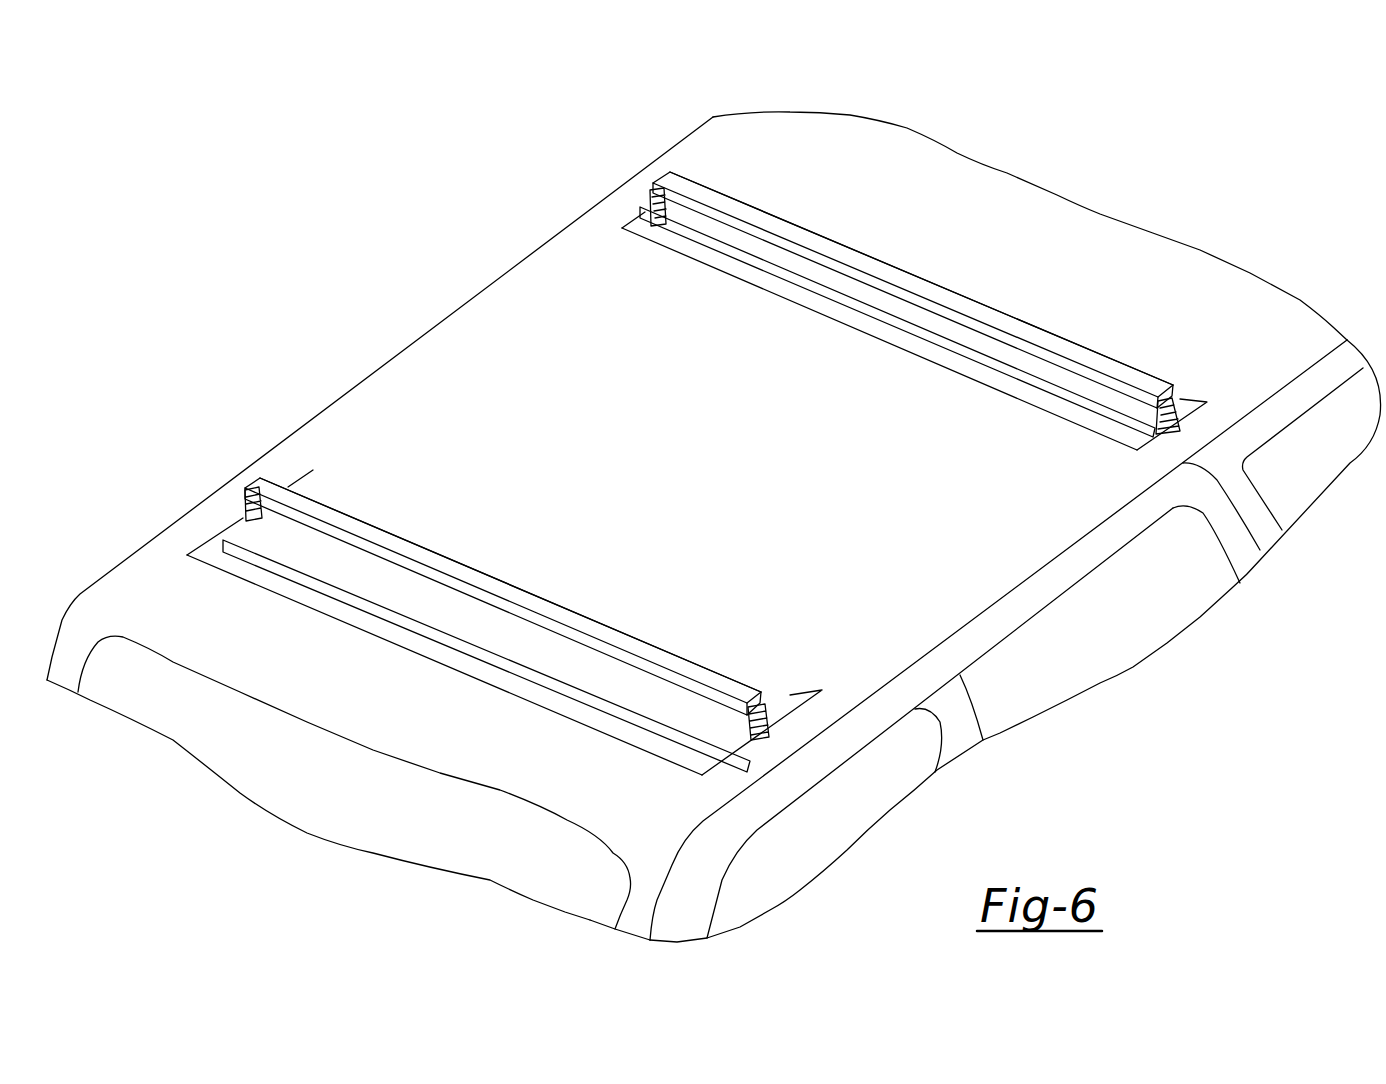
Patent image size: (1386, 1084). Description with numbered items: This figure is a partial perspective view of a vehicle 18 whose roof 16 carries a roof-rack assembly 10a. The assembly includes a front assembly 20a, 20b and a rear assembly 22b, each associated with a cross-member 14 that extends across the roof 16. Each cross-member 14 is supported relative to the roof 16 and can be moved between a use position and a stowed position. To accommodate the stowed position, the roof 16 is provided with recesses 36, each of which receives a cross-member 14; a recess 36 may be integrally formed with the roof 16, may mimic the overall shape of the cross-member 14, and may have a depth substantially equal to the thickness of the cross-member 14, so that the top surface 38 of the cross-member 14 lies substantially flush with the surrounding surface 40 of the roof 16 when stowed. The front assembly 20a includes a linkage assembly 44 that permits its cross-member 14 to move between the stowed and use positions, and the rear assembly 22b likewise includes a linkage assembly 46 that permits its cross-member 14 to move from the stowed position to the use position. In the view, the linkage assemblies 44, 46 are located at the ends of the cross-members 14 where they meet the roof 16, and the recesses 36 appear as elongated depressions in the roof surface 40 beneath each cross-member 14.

The vehicle roof assembly 10a is at (1062, 148).
The cross-member 14 is at (698, 472).
The roof 16 is at (736, 455).
The vehicle 18 is at (1018, 556).
The front assembly 20a is at (929, 233).
The front assembly 20b is at (658, 166).
The rear assembly 22b is at (240, 481).
The recess 36 is at (674, 448).
The top surface 38 is at (1088, 358).
The surface 40 is at (468, 356).
The linkage assembly 44 is at (648, 205).
The linkage assembly 46 is at (243, 515).